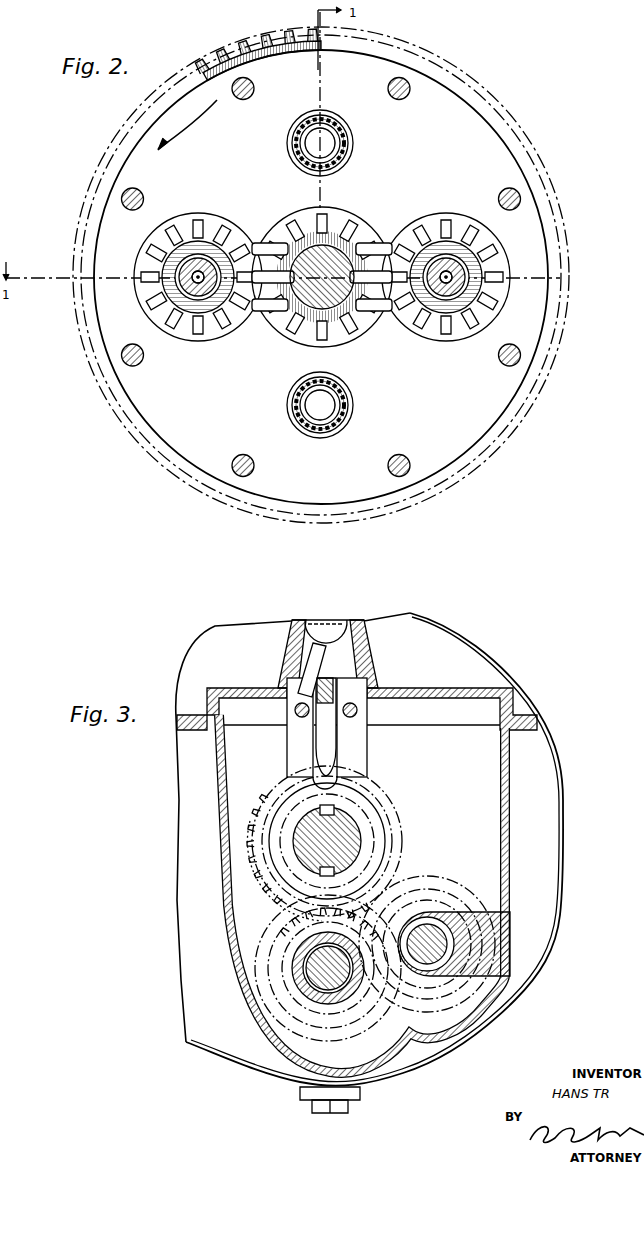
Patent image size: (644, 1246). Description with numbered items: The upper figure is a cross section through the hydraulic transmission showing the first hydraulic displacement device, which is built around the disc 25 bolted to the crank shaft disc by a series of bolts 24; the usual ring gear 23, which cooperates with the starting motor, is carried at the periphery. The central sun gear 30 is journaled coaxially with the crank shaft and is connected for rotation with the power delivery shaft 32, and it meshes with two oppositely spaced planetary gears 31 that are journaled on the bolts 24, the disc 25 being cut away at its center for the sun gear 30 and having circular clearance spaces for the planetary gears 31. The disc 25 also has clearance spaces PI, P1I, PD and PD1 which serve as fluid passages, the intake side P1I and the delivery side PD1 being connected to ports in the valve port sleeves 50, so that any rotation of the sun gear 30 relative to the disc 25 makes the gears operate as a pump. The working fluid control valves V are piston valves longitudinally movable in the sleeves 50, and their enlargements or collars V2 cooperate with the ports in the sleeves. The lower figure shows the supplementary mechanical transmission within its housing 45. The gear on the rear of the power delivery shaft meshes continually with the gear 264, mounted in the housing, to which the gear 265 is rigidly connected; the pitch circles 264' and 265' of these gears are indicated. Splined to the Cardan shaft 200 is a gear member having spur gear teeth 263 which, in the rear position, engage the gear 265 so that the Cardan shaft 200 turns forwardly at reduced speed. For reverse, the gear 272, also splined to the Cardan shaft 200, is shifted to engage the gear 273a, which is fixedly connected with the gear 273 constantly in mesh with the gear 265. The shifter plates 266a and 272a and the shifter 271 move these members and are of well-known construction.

In FIG. 2, the ring gear 23 is at (237, 48).
In FIG. 2, the disc 25 is at (513, 170).
In FIG. 2, the valve port sleeve 50 is at (350, 129).
In FIG. 2, the working fluid control valve V is at (340, 142).
In FIG. 2, the valve collar V2 is at (300, 146).
In FIG. 2, the central sun gear 30 is at (330, 330).
In FIG. 2, the power delivery shaft 32 is at (337, 248).
In FIG. 2, the planetary gear 31 is at (500, 268).
In FIG. 2, the bolt 24 is at (470, 278).
In FIG. 2, the fluid intake clearance space PI is at (258, 230).
In FIG. 2, the fluid delivery clearance space PD1 is at (385, 227).
In FIG. 2, the fluid delivery clearance space PD is at (260, 330).
In FIG. 2, the fluid intake clearance space P1I is at (392, 330).
In FIG. 3, the housing 45 is at (425, 689).
In FIG. 3, the shifter 271 is at (332, 622).
In FIG. 3, the shifter plate 266a is at (290, 748).
In FIG. 3, the shifter plate 272a is at (355, 745).
In FIG. 3, the Cardan shaft 200 is at (352, 846).
In FIG. 3, the spur gear teeth 263 is at (262, 862).
In FIG. 3, the reverse gear 272 is at (292, 905).
In FIG. 3, the gear 264 is at (221, 952).
In FIG. 3, the gear 265 is at (299, 968).
In FIG. 3, the driven gear shaft pitch circle 265' is at (336, 1039).
In FIG. 3, the gear hub pitch circle 264' is at (271, 1051).
In FIG. 3, the reverse idler gear 273 is at (452, 878).
In FIG. 3, the reverse engagement gear 273a is at (477, 898).